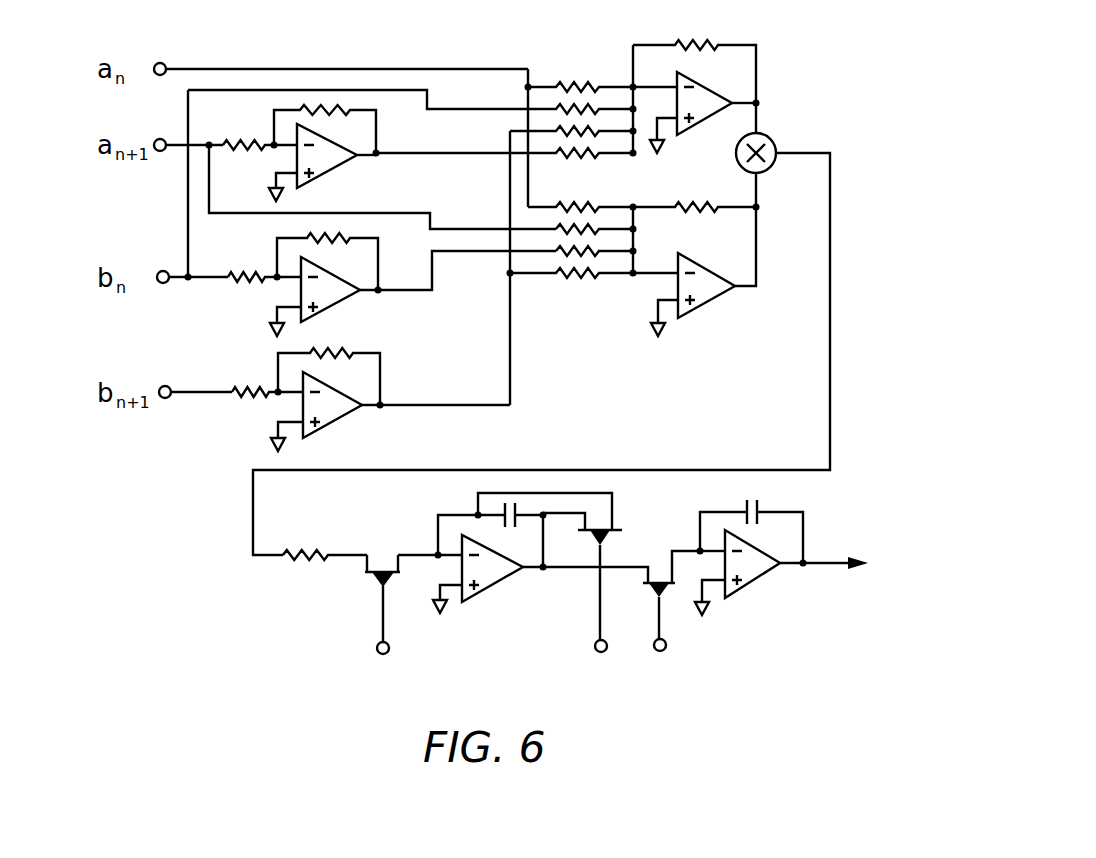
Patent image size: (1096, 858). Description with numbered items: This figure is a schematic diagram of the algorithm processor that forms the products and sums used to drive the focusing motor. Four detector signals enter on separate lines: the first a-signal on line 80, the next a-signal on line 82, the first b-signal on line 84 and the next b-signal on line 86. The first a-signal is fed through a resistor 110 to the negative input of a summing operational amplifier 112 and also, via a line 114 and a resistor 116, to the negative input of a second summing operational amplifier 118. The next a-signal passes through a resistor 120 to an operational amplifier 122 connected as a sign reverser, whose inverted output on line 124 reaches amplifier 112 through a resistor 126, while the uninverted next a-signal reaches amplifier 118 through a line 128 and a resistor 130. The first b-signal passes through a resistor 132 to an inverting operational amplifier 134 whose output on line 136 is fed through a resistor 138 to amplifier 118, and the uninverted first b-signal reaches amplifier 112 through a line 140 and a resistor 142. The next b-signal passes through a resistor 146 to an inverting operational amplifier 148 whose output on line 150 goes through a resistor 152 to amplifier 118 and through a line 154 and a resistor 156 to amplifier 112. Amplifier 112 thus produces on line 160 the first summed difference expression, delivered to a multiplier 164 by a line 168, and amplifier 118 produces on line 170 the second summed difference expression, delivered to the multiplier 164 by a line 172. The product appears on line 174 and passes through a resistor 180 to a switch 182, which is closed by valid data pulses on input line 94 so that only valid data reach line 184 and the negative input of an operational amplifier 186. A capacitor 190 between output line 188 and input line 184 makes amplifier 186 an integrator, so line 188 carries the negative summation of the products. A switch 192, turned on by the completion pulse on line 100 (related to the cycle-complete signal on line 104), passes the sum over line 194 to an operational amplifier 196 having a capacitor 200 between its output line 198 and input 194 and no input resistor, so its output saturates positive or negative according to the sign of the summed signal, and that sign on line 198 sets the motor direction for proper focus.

The line 80 is at (174, 69).
The line 82 is at (178, 143).
The line 84 is at (183, 272).
The line 86 is at (188, 388).
The input line 94 is at (382, 634).
The line 100 is at (658, 630).
The line 104 is at (600, 634).
The resistor 110 is at (567, 84).
The operational amplifier 112 is at (706, 115).
The line 114 is at (530, 190).
The resistor 116 is at (585, 206).
The second operational amplifier 118 is at (700, 270).
The resistor 120 is at (253, 140).
The operational amplifier 122 is at (335, 166).
The line 124 is at (411, 141).
The resistor 126 is at (598, 158).
The line 128 is at (373, 210).
The resistor 130 is at (558, 229).
The resistor 132 is at (257, 272).
The operational amplifier 134 is at (329, 300).
The line 136 is at (424, 296).
The resistor 138 is at (558, 252).
The line 140 is at (188, 190).
The resistor 142 is at (598, 107).
The resistor 146 is at (267, 388).
The operational amplifier 148 is at (329, 418).
The line 150 is at (442, 408).
The resistor 152 is at (573, 288).
The line 154 is at (510, 172).
The resistor 156 is at (608, 147).
The line 160 is at (749, 97).
The multiplier 164 is at (778, 143).
The line 168 is at (762, 120).
The line 170 is at (743, 292).
The line 172 is at (758, 241).
The line 174 is at (832, 293).
The resistor 180 is at (313, 552).
The switch 182 is at (367, 574).
The line 184 is at (413, 552).
The operational amplifier 186 is at (488, 585).
The line 188 is at (545, 572).
The capacitor 190 is at (498, 522).
The switch 192 is at (647, 585).
The line 194 is at (687, 549).
The operational amplifier 196 is at (757, 588).
The line 198 is at (807, 566).
The capacitor 200 is at (760, 507).